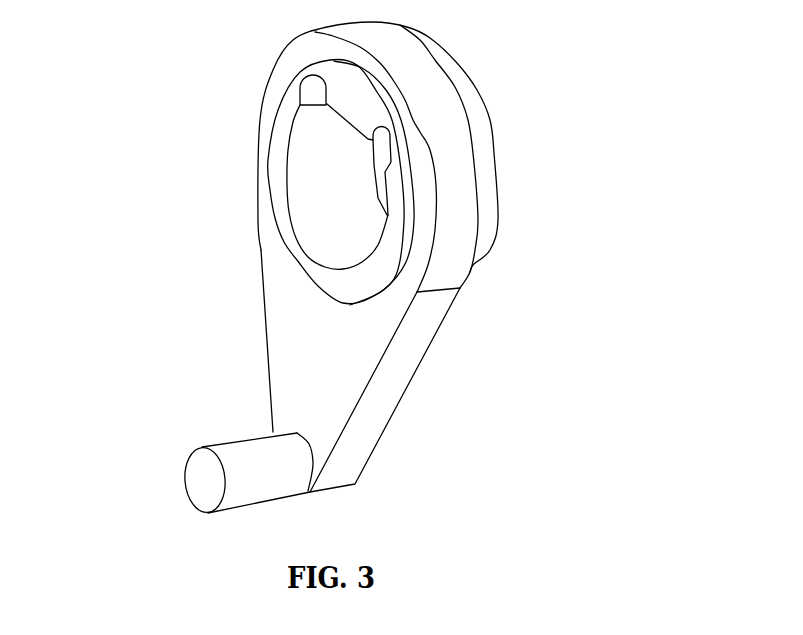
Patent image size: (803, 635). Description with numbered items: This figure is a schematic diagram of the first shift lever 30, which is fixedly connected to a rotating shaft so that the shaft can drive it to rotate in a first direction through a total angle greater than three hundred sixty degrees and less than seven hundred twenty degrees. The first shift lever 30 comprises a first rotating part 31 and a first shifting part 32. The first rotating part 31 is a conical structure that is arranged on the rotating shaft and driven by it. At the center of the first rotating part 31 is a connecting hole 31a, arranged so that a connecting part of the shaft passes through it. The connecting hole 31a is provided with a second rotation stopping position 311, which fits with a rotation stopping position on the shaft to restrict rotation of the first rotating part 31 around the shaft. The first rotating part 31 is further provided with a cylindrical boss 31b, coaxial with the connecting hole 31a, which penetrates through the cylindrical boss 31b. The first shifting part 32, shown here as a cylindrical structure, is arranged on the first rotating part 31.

The first shift lever 30 is at (372, 268).
The first rotating part 31 is at (372, 163).
The second rotation stopping position 311 is at (347, 124).
The connecting hole 31a is at (345, 217).
The cylindrical boss 31b is at (300, 258).
The first shifting part 32 is at (207, 474).